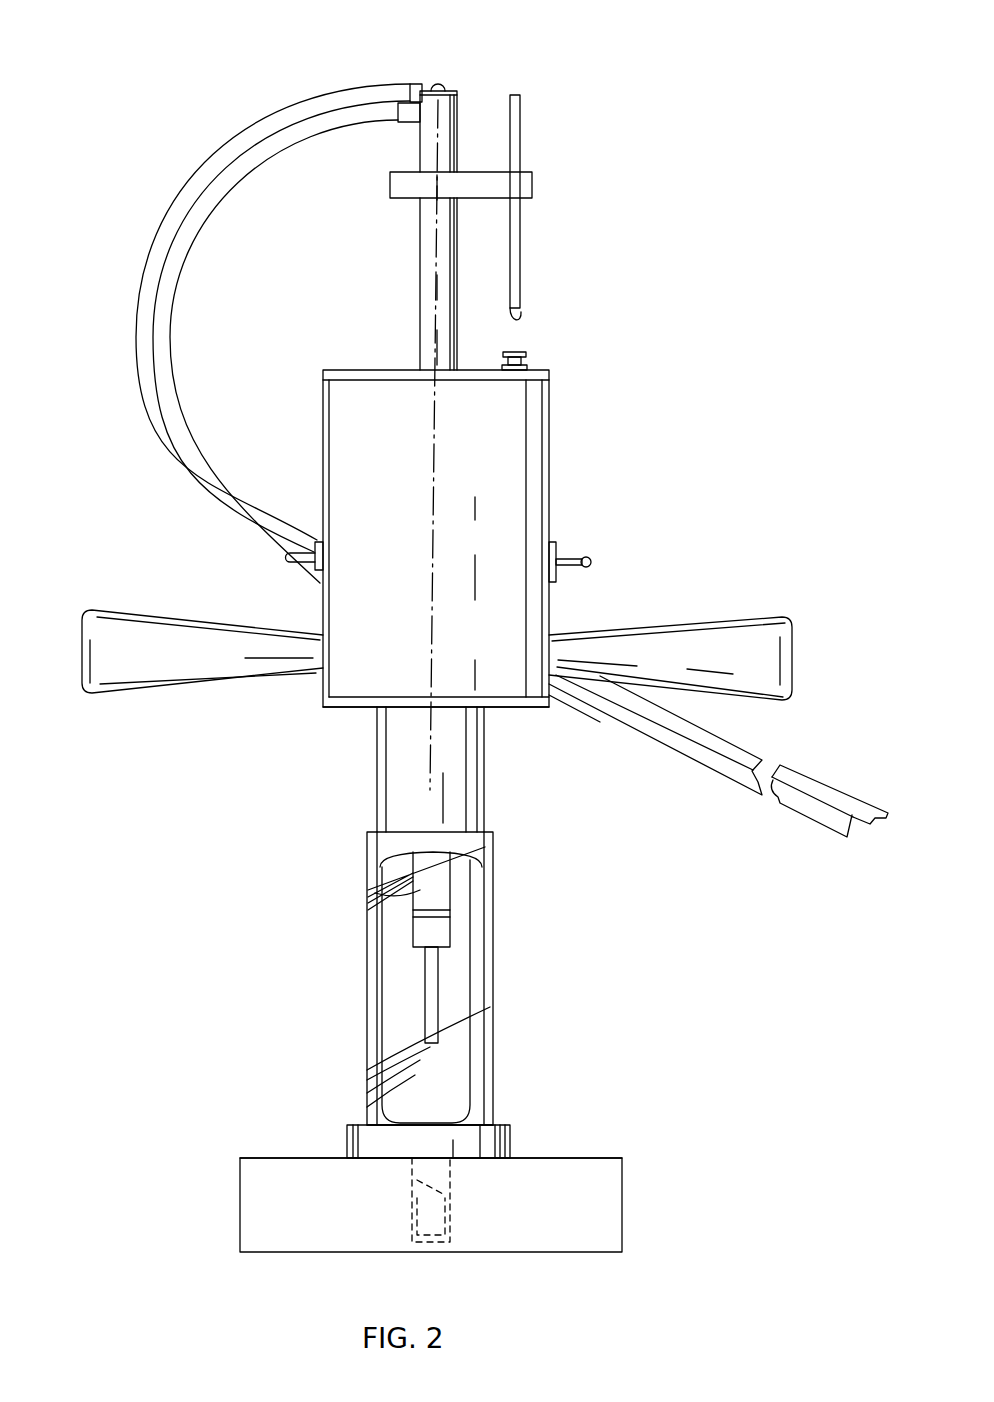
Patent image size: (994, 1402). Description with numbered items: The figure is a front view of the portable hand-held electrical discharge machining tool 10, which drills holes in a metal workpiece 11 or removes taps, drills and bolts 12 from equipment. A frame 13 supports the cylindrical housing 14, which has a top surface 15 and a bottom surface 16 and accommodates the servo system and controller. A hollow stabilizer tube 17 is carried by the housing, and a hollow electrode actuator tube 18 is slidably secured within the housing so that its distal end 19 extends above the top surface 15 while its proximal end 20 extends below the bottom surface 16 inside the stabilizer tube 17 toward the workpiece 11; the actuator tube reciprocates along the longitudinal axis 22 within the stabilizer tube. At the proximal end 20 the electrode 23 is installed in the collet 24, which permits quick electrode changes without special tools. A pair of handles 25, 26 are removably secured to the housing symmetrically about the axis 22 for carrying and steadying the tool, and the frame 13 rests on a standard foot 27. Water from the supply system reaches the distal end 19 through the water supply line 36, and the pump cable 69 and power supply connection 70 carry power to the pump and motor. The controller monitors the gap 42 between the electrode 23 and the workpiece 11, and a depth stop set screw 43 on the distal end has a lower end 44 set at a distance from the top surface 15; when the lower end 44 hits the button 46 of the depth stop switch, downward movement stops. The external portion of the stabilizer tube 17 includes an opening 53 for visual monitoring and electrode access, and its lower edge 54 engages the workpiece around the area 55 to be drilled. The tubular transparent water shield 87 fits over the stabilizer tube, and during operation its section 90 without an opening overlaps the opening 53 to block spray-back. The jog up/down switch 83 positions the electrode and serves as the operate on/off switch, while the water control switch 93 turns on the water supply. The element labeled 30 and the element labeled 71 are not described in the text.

The electrical discharge machining (EDM) tool 10 is at (210, 40).
The workpiece 11 is at (255, 1199).
The bolt 12 is at (403, 1262).
The frame 13 is at (553, 465).
The cylindrical housing 14 is at (348, 690).
The top surface 15 is at (360, 370).
The bottom surface 16 is at (510, 703).
The stabilizer tube 17 is at (395, 775).
The electrode actuator tube 18 is at (428, 272).
The distal end 19 is at (453, 130).
The proximal end 20 is at (383, 887).
The longitudinal axis 22 is at (447, 460).
The electrode 23 is at (430, 992).
The collet 24 is at (445, 935).
The handle 25 is at (130, 622).
The handle 26 is at (738, 630).
The standard foot 27 is at (497, 1140).
The arcuate tube 30 is at (291, 108).
The water supply line 36 is at (187, 240).
The gap 42 is at (440, 1088).
The depth stop set screw 43 is at (515, 247).
The lower end 44 is at (517, 311).
The actuating element (button) 46 is at (518, 343).
The opening 53 is at (393, 972).
The lower edge 54 is at (378, 1115).
The area 55 is at (477, 1163).
The pump cable 69 is at (813, 812).
The power supply connection 70 is at (830, 793).
The block 71 is at (850, 813).
The jog up/down switch 83 is at (283, 557).
The water shield 87 is at (482, 847).
The section 90 is at (417, 1003).
The water control switch 93 is at (592, 557).